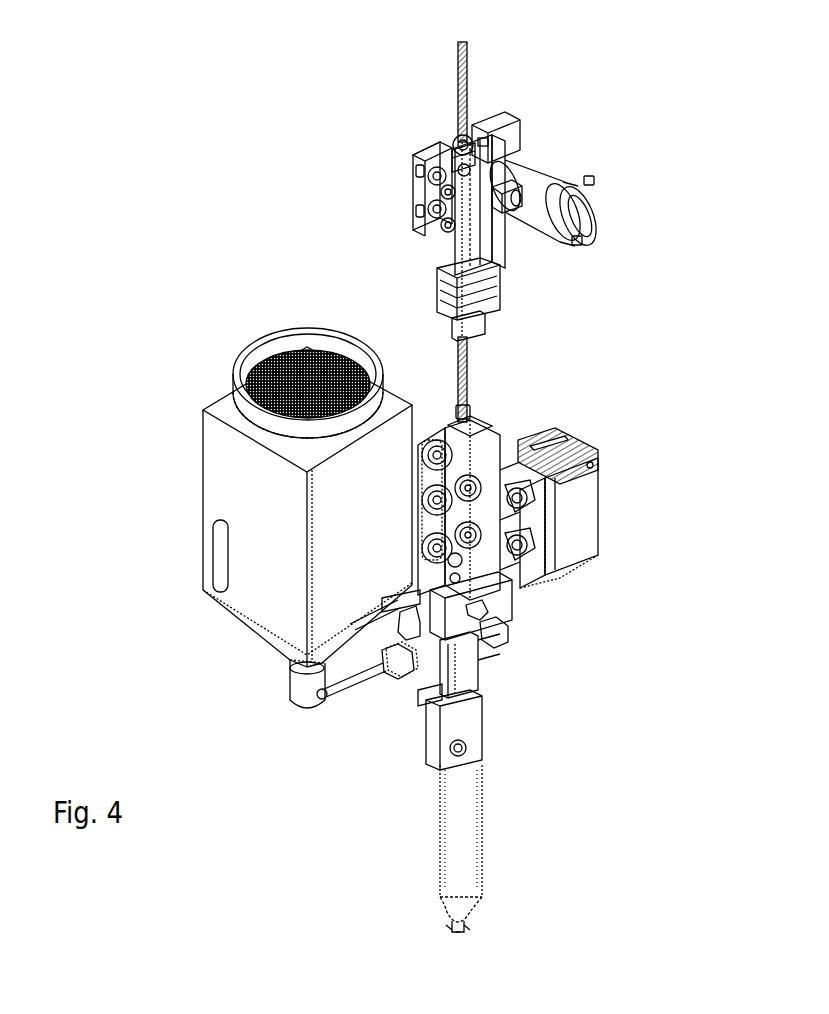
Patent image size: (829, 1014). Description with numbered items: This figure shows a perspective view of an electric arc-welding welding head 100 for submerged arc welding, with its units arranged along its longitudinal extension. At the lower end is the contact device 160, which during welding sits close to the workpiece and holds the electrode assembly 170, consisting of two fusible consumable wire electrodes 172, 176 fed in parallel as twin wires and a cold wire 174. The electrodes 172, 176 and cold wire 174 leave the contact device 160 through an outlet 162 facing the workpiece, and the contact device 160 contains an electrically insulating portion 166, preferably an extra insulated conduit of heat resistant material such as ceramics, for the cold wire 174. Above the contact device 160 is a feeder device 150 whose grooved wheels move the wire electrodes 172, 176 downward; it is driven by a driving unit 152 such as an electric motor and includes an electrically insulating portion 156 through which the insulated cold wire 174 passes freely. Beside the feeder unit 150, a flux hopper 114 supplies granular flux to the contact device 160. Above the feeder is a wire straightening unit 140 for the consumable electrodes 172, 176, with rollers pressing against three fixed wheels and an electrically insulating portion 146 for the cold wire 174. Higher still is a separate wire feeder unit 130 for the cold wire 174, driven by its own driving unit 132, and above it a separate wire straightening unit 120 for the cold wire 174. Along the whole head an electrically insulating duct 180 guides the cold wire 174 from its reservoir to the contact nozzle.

The electric arc-welding welding head 100 is at (208, 212).
The flux hopper 114 is at (268, 492).
The wire straightening unit 120 is at (466, 140).
The wire feeder unit 130 is at (405, 200).
The driving unit 132 is at (596, 215).
The wire straightening unit 140 is at (481, 465).
The electrically insulating portion 146 is at (556, 461).
The feeder device 150 is at (560, 481).
The driving unit 152 is at (574, 527).
The electrically insulating portion 156 is at (486, 622).
The contact device 160 is at (459, 815).
The outlet 162 is at (450, 921).
The electrically insulating portion 166 is at (571, 812).
The electrode assembly 170 is at (484, 918).
The consumable wire electrode 172 is at (470, 928).
The cold wire 174 is at (468, 932).
The consumable wire electrode 176 is at (452, 932).
The electrically insulating duct 180 is at (455, 79).